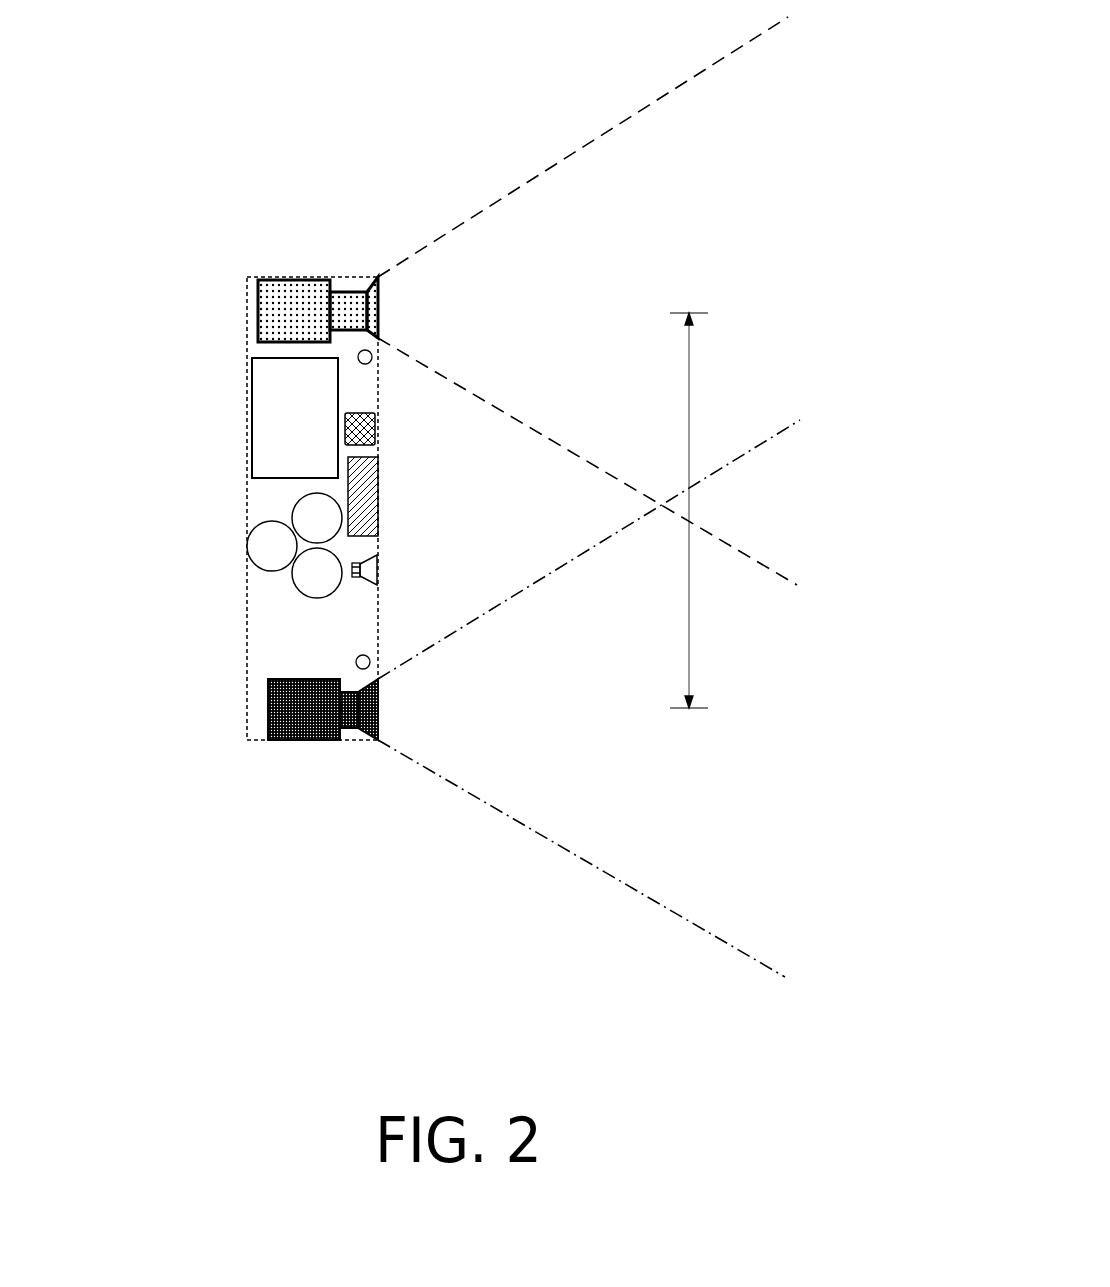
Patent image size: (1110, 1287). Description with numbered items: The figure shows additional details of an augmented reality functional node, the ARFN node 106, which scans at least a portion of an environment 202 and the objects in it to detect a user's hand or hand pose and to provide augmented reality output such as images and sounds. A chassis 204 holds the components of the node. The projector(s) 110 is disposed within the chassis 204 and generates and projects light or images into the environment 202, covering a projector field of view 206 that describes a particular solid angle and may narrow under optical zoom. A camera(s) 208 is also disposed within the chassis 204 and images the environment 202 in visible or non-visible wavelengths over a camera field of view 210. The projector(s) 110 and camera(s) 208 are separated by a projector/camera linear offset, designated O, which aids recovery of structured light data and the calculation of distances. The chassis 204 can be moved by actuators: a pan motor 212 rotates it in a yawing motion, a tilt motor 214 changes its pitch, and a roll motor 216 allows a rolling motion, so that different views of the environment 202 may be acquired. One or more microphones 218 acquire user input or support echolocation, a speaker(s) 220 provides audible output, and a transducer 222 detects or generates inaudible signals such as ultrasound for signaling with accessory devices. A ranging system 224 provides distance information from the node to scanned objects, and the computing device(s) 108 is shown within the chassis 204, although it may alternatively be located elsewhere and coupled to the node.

The ARFN node 106 is at (258, 280).
The projector(s) 110 is at (297, 312).
The chassis 204 is at (313, 278).
The projector field of view 206 is at (588, 139).
The microphones 218 is at (371, 351).
The transducer 222 is at (373, 415).
The computing device(s) 108 is at (293, 417).
The pan motor 212 is at (293, 519).
The ranging system 224 is at (378, 488).
The tilt motor 214 is at (247, 547).
The speaker(s) 220 is at (378, 570).
The roll motor 216 is at (293, 568).
The environment 202 is at (741, 569).
The camera(s) 208 is at (302, 712).
The camera field of view 210 is at (537, 838).